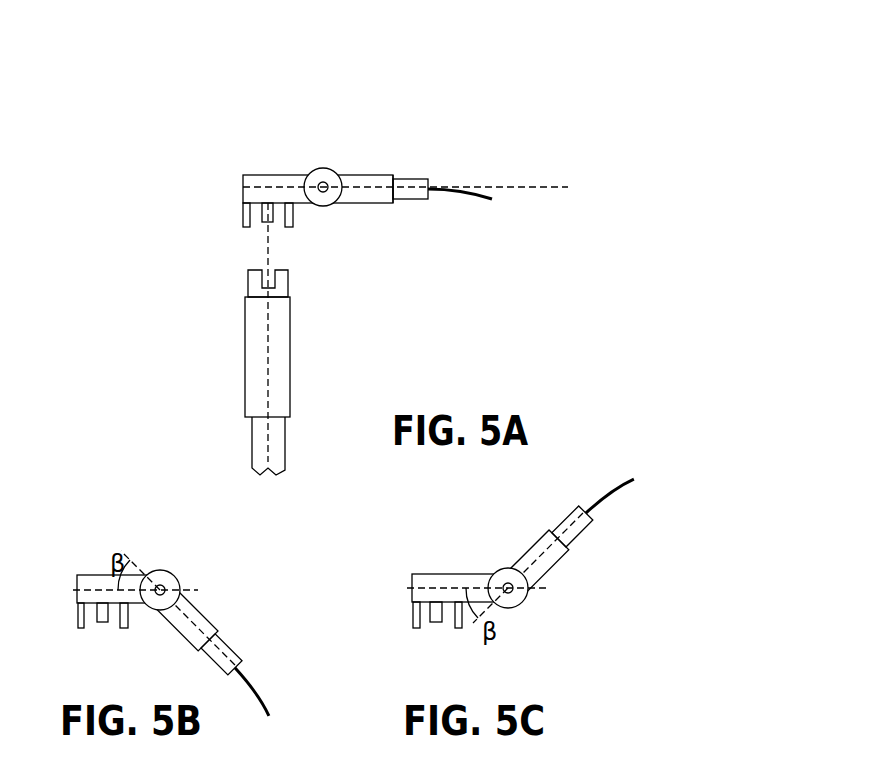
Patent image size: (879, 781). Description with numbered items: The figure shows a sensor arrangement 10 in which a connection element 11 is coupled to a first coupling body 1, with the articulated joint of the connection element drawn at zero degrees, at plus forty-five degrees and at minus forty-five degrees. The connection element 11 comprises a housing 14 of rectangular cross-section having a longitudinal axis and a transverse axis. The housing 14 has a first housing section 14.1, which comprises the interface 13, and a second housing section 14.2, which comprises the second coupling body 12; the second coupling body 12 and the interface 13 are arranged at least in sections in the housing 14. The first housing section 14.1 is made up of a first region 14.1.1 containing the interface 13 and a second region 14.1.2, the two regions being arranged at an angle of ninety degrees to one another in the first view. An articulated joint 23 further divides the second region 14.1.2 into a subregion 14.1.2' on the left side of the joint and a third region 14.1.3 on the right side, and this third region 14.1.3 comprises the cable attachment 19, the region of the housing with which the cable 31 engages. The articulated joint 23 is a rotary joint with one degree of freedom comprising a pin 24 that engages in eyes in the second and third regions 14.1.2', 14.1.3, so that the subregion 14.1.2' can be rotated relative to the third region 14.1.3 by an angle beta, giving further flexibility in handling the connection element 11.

The first coupling body 1 is at (312, 367).
The sensor arrangement 10 is at (377, 302).
The connection element 11 is at (432, 80).
The second coupling body 12 is at (293, 215).
The second interface 13 is at (270, 221).
The housing 14 is at (299, 171).
The first housing section 14.1 is at (233, 174).
The first region 14.1.1 is at (261, 230).
The second region 14.1.2 is at (243, 160).
The second region subregion 14.1.2' is at (292, 157).
The third region 14.1.3 is at (390, 196).
The second housing section 14.2 is at (234, 227).
The cable attachment 19 is at (417, 185).
The articulated joint 23 is at (334, 159).
The pin 24 is at (328, 184).
The cable 31 is at (495, 199).